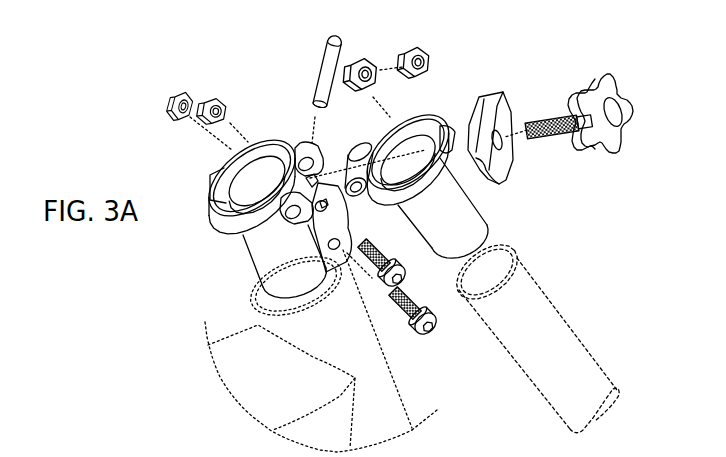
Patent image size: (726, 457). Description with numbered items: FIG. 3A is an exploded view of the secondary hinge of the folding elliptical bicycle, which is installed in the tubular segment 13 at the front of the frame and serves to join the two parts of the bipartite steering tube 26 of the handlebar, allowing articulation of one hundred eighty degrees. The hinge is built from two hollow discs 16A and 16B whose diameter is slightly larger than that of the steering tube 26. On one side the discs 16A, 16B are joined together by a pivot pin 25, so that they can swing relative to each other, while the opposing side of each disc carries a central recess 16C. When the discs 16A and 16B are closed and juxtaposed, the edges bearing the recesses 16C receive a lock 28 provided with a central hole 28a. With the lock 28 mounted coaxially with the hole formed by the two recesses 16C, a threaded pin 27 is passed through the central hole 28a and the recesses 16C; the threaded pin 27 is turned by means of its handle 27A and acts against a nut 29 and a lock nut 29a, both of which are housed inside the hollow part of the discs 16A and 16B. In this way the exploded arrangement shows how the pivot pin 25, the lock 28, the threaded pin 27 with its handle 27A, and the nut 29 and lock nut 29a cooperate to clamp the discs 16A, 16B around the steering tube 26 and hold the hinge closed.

The tubular segment 13 is at (385, 388).
The hollow disc 16A is at (265, 140).
The hollow disc 16B is at (410, 113).
The central recess 16C is at (212, 183).
The pivot pin 25 is at (323, 44).
The steering tube 26 is at (536, 310).
The threaded pin 27 is at (546, 110).
The handle 27A is at (604, 91).
The lock 28 is at (500, 96).
The central hole 28a is at (508, 163).
The nut 29 is at (431, 50).
The lock nut 29a is at (363, 58).